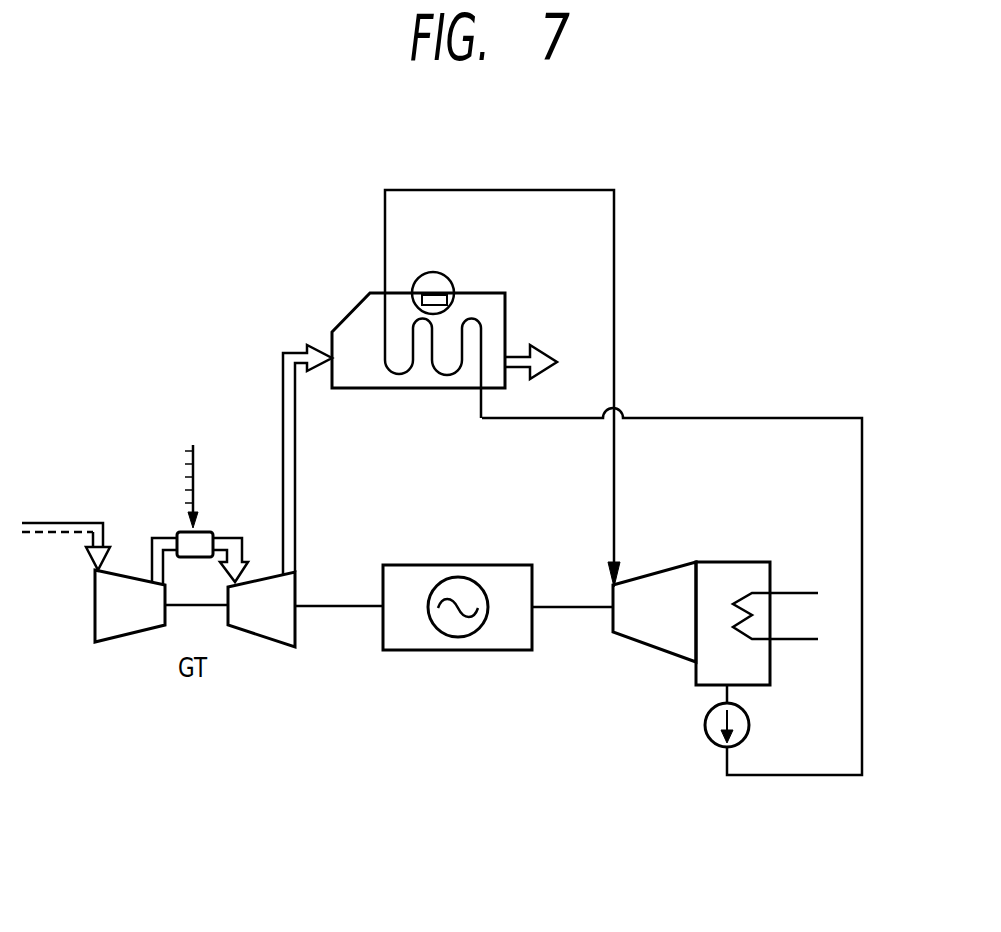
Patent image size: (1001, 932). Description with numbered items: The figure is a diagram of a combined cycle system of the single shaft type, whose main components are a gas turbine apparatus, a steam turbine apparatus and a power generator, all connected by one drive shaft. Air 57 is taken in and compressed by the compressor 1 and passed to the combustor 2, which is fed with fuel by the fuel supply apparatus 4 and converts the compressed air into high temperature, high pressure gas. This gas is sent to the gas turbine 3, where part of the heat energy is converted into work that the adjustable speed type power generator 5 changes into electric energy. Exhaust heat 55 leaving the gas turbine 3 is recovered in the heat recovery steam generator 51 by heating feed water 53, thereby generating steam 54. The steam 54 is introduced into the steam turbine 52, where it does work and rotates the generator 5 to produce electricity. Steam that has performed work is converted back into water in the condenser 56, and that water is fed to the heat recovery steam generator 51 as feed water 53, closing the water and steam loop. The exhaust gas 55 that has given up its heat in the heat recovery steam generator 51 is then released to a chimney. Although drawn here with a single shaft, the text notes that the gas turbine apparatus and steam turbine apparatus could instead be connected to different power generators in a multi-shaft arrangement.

The compressor 1 is at (114, 635).
The combustor 2 is at (185, 540).
The gas turbine 3 is at (281, 636).
The fuel supply apparatus 4 is at (190, 473).
The adjustable speed type power generator 5 is at (509, 650).
The heat recovery steam generator 51 is at (348, 316).
The steam turbine 52 is at (673, 580).
The feed water 53 is at (657, 418).
The steam 54 is at (573, 188).
The exhaust heat 55 is at (295, 528).
The condenser 56 is at (740, 572).
The air 57 is at (86, 520).